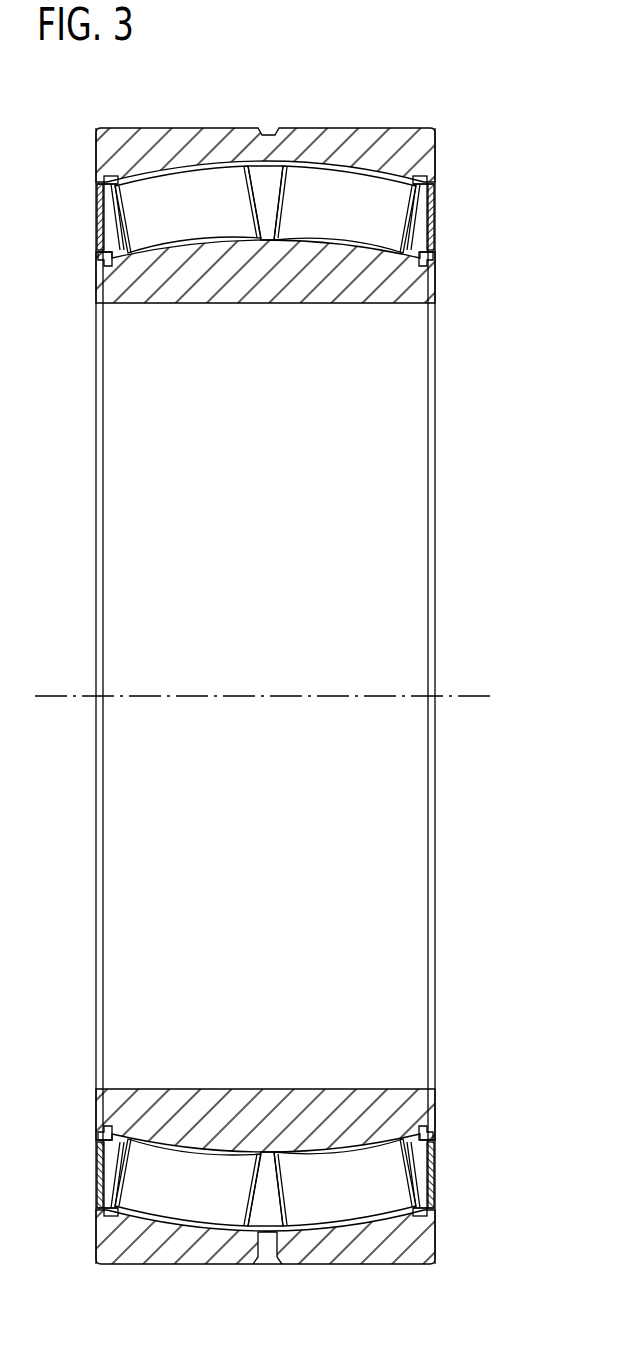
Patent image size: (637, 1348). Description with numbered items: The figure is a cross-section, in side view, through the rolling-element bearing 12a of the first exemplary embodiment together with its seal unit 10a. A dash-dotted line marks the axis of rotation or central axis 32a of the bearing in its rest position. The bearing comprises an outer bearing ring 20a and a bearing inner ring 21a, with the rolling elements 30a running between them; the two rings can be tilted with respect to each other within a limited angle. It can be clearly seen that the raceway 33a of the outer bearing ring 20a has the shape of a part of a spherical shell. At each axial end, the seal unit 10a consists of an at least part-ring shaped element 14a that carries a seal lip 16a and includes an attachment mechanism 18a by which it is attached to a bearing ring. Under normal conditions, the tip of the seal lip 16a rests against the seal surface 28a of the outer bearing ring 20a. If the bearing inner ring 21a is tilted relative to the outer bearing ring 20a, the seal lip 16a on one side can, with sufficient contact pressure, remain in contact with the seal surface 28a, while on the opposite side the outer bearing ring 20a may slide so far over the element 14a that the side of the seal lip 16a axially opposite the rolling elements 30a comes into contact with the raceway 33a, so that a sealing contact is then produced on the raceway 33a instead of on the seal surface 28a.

The seal unit 10a is at (92, 181).
The rolling-element bearing 12a is at (501, 146).
The at least part-ring shaped element 14a is at (438, 222).
The seal lip 16a is at (437, 188).
The attachment mechanism 18a is at (437, 263).
The outer bearing ring 20a is at (437, 1248).
The bearing inner ring 21a is at (437, 1100).
The seal surface 28a is at (426, 176).
The rolling elements 30a is at (312, 236).
The central axis 32a is at (477, 697).
The raceway 33a is at (333, 163).